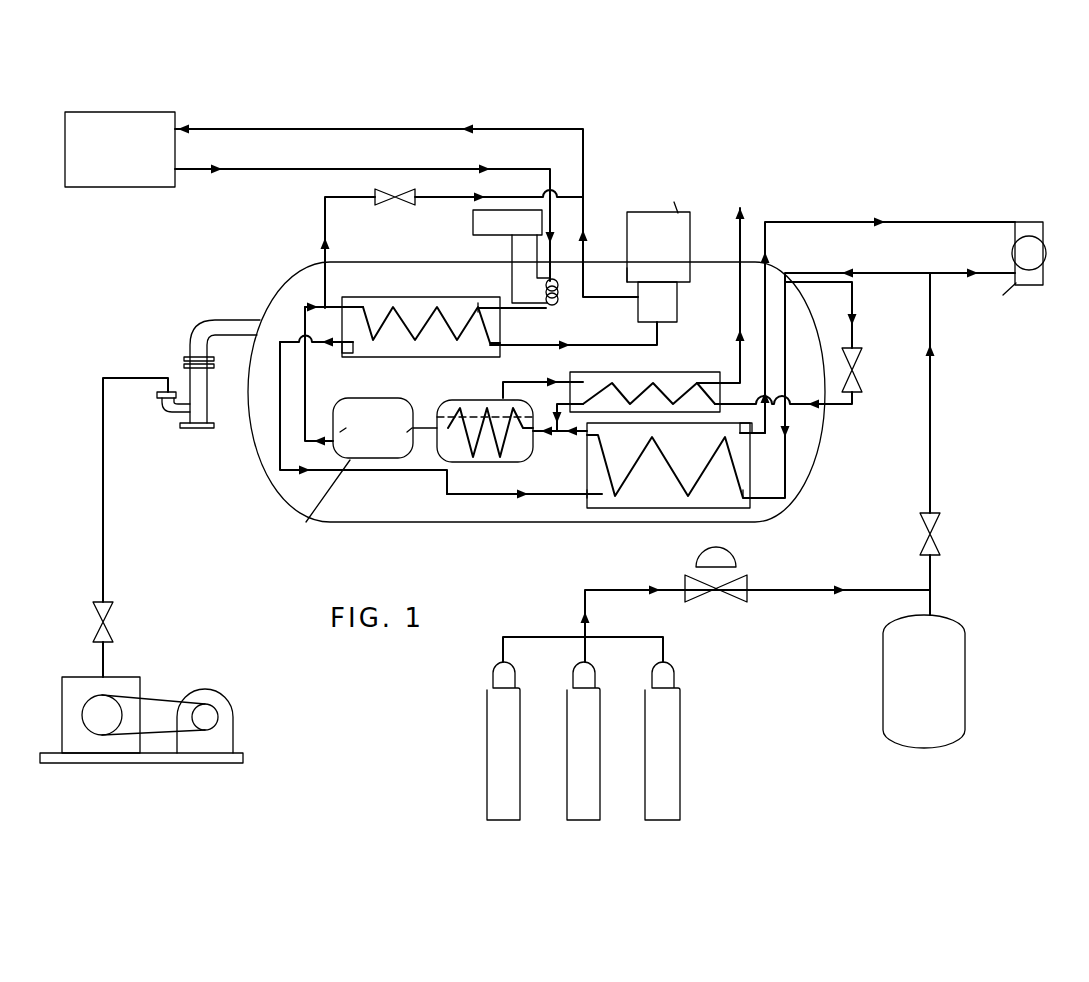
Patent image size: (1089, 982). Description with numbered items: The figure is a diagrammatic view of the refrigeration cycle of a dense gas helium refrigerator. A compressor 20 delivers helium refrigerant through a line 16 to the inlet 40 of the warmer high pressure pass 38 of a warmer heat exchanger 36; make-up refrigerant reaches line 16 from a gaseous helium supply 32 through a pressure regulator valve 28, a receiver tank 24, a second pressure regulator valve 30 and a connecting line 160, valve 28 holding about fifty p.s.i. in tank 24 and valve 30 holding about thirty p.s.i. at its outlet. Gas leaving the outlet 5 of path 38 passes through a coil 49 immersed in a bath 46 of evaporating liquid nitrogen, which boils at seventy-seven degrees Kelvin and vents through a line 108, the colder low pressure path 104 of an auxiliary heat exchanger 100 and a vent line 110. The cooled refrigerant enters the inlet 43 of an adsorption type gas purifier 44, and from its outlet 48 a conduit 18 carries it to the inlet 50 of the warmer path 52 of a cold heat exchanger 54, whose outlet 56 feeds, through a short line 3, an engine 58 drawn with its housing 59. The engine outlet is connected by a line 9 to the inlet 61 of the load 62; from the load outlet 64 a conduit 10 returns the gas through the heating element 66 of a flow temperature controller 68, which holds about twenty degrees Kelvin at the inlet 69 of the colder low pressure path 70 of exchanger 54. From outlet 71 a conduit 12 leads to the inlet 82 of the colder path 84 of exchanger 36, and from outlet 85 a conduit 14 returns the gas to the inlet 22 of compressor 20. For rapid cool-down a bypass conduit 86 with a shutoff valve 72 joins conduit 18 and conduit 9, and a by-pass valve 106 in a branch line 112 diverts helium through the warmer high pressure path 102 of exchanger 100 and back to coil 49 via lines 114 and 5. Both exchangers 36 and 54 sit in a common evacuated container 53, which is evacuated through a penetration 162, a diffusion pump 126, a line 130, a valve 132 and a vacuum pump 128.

The conduit from heat exchanger to engine 3 is at (607, 347).
The outlet 5 is at (560, 440).
The line 9 is at (438, 128).
The conduit 10 is at (423, 175).
The conduit 12 is at (279, 389).
The conduit 14 is at (739, 283).
The line 16 is at (892, 275).
The conduit 18 is at (307, 414).
The compressor 20 is at (1042, 226).
The inlet 22 is at (1016, 224).
The receiver tank 24 is at (883, 672).
The pressure regulator valve 28 is at (738, 575).
The pressure regulator valve 30 is at (934, 535).
The gaseous helium supply 32 is at (573, 786).
The warmer heat exchanger 36 is at (676, 509).
The warmer path 38 is at (668, 470).
The inlet 40 is at (745, 493).
The inlet 43 is at (408, 431).
The gas purifier 44 is at (377, 400).
The liquid nitrogen bath 46 is at (465, 463).
The outlet 48 is at (342, 433).
The coil 49 is at (506, 461).
The inlet 50 is at (348, 301).
The warmer path 52 is at (400, 304).
The evacuated container means 53 is at (808, 484).
The cold heat exchanger 54 is at (472, 361).
The outlet 56 is at (503, 345).
The engine 58 is at (627, 274).
The engine 59 is at (690, 244).
The inlet 61 is at (180, 126).
The load 62 is at (128, 188).
The outlet 64 is at (180, 172).
The heating element 66 is at (559, 300).
The flow temperature controller 68 is at (490, 233).
The inlet 69 is at (500, 311).
The colder low pressure path 70 is at (488, 303).
The outlet 71 is at (336, 346).
The shutoff valve 72 is at (398, 202).
The inlet 82 is at (578, 493).
The colder low pressure path 84 is at (744, 427).
The outlet 85 is at (750, 438).
The bypass conduit 86 is at (324, 209).
The auxiliary heat exchanger 100 is at (652, 371).
The warmer high pressure path 102 is at (660, 381).
The colder low pressure path 104 is at (715, 371).
The by-pass valve 106 is at (860, 362).
The line 108 is at (502, 385).
The vent line 110 is at (738, 312).
The conduit 112 is at (811, 284).
The line 114 is at (552, 414).
The diffusion pump 126 is at (205, 413).
The vacuum pump 128 is at (113, 755).
The vacuum line 130 is at (105, 526).
The valve 132 is at (110, 622).
The refrigerant supply line 160 is at (932, 578).
The penetration 162 is at (216, 318).